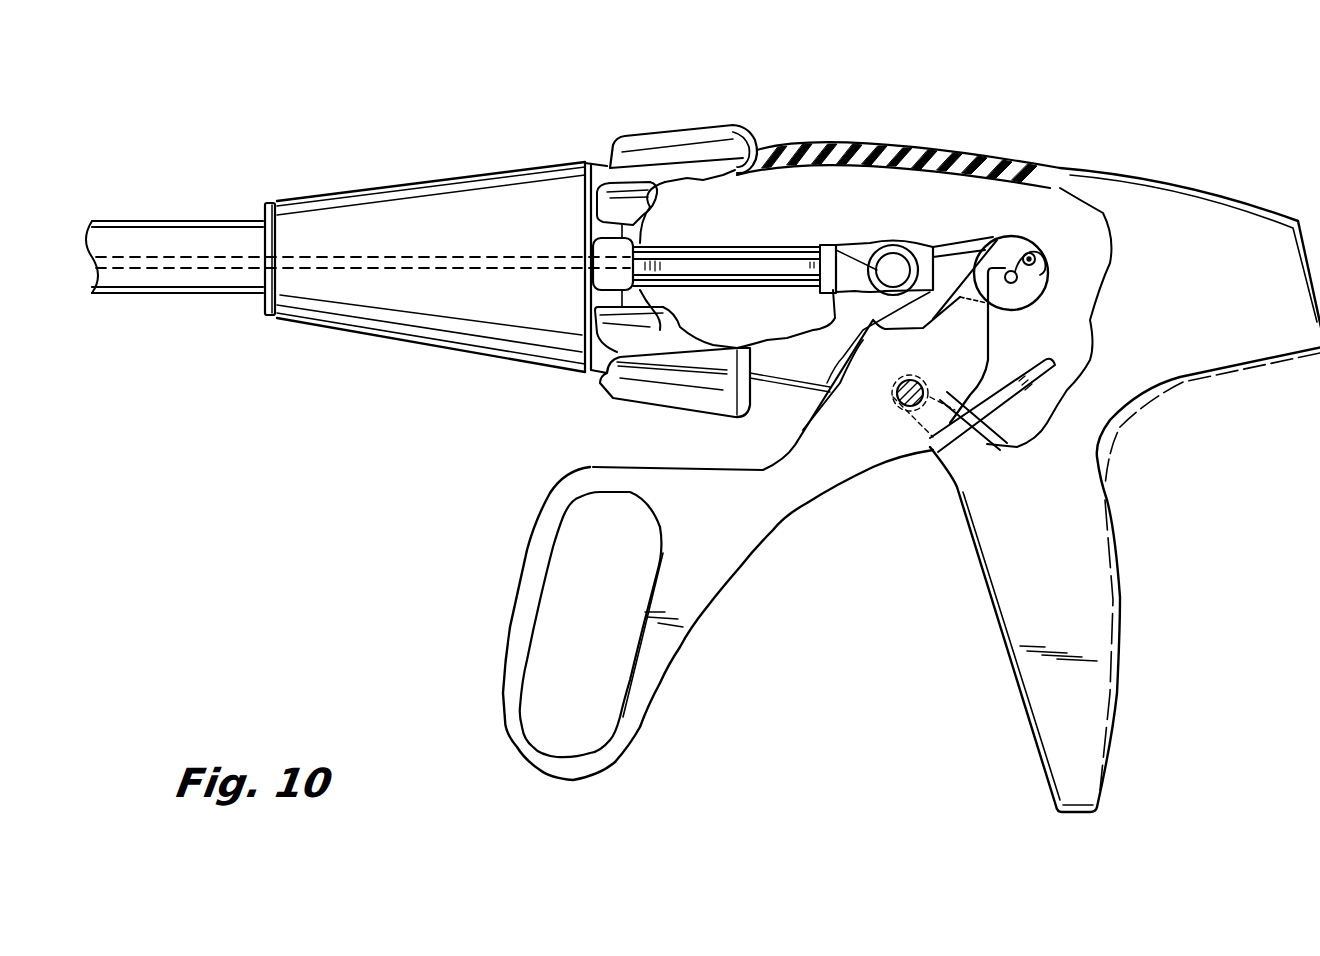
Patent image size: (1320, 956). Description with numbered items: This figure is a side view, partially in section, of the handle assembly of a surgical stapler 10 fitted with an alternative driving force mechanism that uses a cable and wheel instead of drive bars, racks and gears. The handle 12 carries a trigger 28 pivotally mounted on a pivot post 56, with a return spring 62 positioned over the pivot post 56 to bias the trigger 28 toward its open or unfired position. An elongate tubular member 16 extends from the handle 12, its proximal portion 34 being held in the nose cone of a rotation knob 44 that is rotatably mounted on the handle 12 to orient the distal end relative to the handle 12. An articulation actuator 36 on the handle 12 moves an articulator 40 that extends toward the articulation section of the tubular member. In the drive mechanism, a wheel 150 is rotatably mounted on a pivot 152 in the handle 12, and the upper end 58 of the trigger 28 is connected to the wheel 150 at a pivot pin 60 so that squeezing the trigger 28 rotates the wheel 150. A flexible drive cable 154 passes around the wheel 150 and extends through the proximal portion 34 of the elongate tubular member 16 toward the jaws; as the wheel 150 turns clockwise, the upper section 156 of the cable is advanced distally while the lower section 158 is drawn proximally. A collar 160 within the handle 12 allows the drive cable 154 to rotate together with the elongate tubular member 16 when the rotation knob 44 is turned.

The surgical stapler 10 is at (306, 561).
The handle 12 is at (1185, 188).
The elongate tubular member 16 is at (148, 285).
The trigger 28 is at (527, 578).
The proximal portion 34 is at (178, 227).
The articulation actuator 36 is at (892, 265).
The articulator 40 is at (682, 260).
The rotation knob 44 is at (347, 330).
The pivot post 56 is at (897, 390).
The upper end 58 is at (1010, 250).
The pivot pin 60 is at (1036, 260).
The return spring 62 is at (980, 400).
The wheel 150 is at (1042, 273).
The pivot 152 is at (1015, 281).
The drive cable 154 is at (950, 245).
The upper section 156 is at (977, 243).
The lower section 158 is at (940, 330).
The collar 160 is at (833, 245).